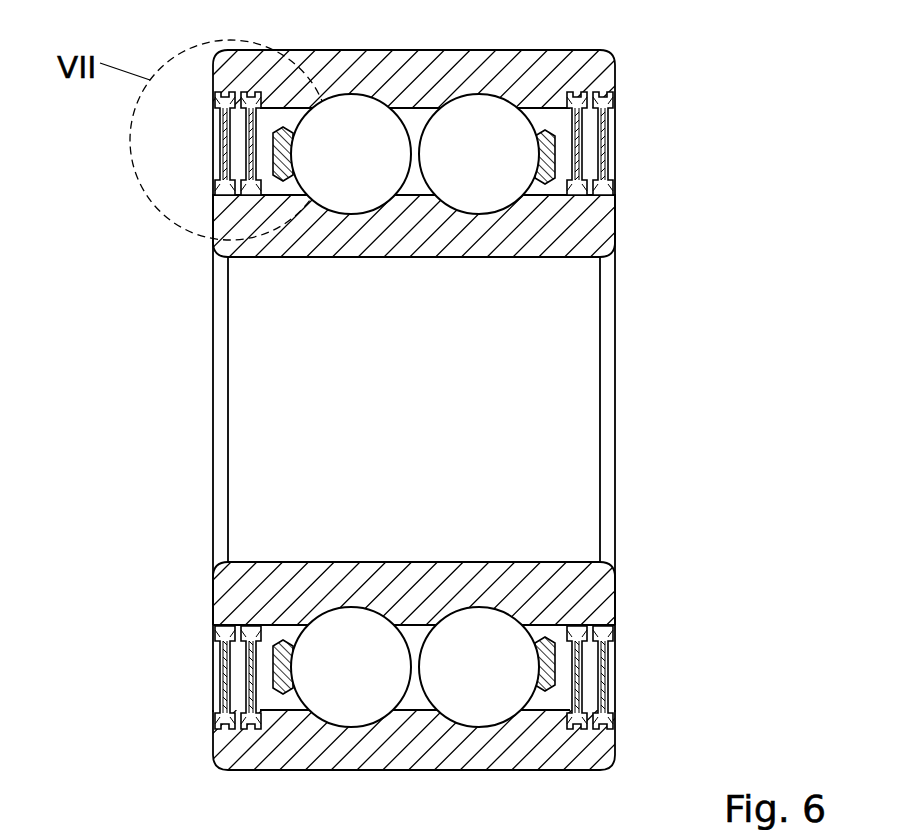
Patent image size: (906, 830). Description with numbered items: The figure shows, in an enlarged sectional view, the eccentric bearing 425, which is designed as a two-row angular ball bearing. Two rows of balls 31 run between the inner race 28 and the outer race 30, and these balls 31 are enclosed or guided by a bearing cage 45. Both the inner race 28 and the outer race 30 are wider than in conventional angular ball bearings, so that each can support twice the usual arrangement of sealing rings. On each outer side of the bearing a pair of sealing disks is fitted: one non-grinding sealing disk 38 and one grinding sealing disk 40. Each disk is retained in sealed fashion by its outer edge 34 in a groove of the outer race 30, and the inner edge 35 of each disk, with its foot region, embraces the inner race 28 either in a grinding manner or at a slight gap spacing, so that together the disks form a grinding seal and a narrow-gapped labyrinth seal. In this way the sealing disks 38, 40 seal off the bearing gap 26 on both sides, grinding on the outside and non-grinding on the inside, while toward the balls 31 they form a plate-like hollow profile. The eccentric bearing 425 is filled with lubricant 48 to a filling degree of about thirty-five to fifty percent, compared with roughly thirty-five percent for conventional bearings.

The eccentric bearing 425 is at (635, 477).
The outer edge 34 is at (550, 90).
The balls 31 is at (495, 130).
The non-grinding sealing disk 38 is at (222, 136).
The grinding sealing disk 40 is at (222, 157).
The bearing cage 45 is at (553, 164).
The inner edge 35 is at (257, 622).
The inner race 28 is at (600, 600).
The bearing gap 26 is at (622, 647).
The lubricant 48 is at (568, 688).
The outer race 30 is at (588, 748).